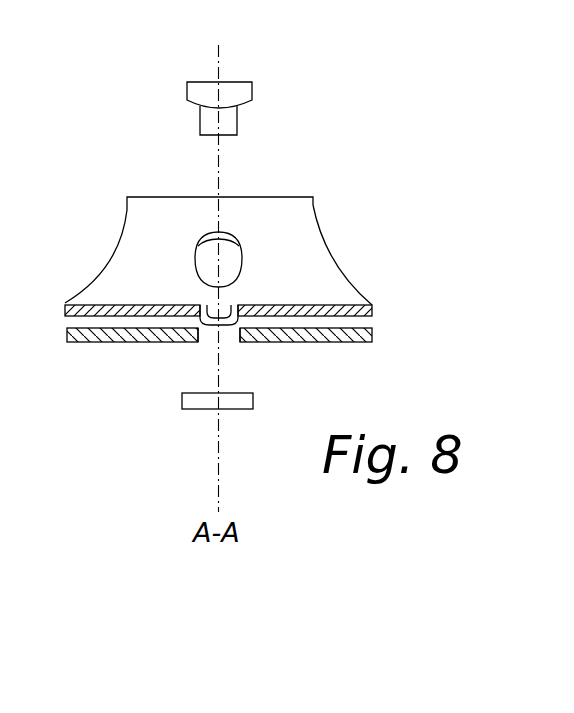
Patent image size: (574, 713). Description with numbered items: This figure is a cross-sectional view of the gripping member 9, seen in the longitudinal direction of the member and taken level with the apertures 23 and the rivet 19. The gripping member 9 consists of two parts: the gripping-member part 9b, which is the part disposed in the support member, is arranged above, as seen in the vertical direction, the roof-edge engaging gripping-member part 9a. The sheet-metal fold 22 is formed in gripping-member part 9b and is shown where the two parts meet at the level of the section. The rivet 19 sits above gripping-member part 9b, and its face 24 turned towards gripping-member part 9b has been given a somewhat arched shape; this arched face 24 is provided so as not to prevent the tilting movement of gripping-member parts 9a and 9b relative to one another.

The rivet 19 is at (205, 81).
The face 24 is at (190, 104).
The gripping member 9 is at (267, 305).
The gripping-member part 9b is at (237, 254).
The roof-edge engaging gripping-member part 9a is at (268, 377).
The apertures 23 is at (222, 307).
The sheet-metal fold 22 is at (218, 335).